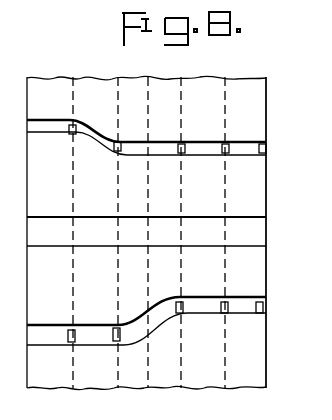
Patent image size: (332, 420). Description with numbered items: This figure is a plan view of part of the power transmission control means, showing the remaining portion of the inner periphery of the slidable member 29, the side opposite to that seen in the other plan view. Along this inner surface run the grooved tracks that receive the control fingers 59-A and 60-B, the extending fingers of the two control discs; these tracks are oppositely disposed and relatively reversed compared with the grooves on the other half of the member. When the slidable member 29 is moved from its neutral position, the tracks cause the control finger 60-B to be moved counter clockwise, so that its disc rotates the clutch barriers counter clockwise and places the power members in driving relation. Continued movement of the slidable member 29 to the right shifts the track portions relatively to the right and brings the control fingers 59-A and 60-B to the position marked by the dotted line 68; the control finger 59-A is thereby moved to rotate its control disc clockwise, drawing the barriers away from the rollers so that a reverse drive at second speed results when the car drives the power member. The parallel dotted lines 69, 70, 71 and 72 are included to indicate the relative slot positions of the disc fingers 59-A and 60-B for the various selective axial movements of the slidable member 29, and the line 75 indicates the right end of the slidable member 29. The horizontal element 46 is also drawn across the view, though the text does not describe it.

The slidable member 29 is at (257, 166).
The horizontal conductor bar 46 is at (257, 232).
The control finger 59-A is at (77, 128).
The control finger 60-B is at (76, 338).
The dotted line 68 is at (72, 190).
The parallel dotted line 69 is at (118, 195).
The parallel dotted line 70 is at (148, 197).
The parallel dotted line 71 is at (181, 195).
The parallel dotted line 72 is at (225, 193).
The line 75 is at (266, 195).